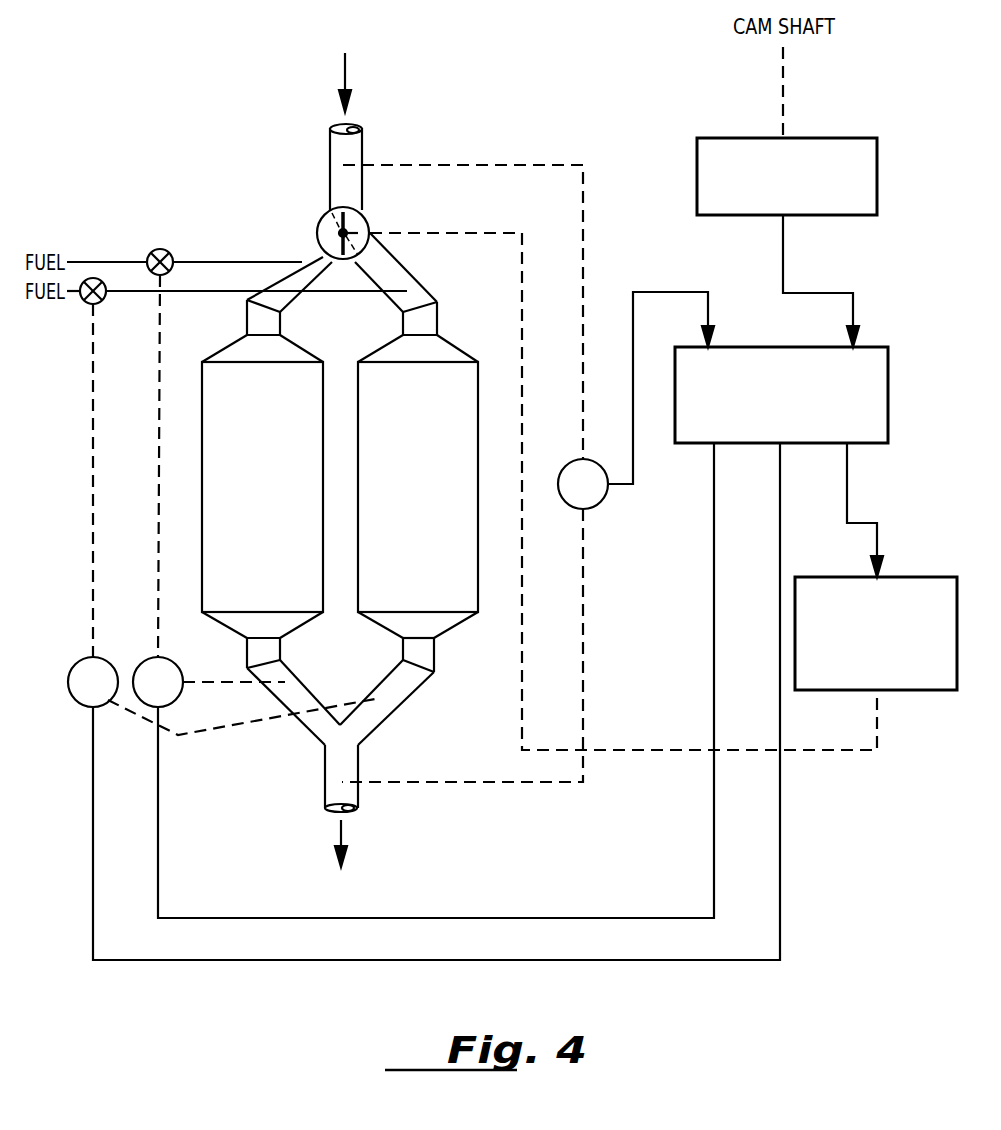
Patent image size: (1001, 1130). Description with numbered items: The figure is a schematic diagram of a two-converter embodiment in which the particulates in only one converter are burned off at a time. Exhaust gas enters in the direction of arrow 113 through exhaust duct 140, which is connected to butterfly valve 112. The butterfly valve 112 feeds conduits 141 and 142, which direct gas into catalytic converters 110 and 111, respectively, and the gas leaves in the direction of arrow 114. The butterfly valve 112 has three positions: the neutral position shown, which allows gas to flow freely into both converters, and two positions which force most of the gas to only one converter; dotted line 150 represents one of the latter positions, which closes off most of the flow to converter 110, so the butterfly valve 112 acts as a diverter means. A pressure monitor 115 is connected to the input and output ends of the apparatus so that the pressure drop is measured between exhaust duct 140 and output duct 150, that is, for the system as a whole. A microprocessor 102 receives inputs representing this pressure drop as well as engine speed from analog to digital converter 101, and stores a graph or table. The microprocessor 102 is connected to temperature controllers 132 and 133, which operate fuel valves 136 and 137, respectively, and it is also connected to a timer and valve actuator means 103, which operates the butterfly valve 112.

The analog to digital converter 101 is at (838, 157).
The microprocessor 102 is at (875, 368).
The timer and valve actuator means 103 is at (927, 588).
The catalytic converter 110 is at (272, 530).
The catalytic converter 111 is at (427, 530).
The butterfly valve 112 is at (358, 226).
The arrow 113 is at (347, 70).
The arrow 114 is at (345, 830).
The pressure monitor 115 is at (597, 495).
The temperature controller 132 is at (75, 668).
The temperature controller 133 is at (146, 665).
The fuel valve 136 is at (104, 302).
The fuel valve 137 is at (162, 249).
The exhaust duct 140 is at (355, 152).
The conduit 141 is at (308, 255).
The conduit 142 is at (387, 272).
The dotted line 150 is at (335, 225).